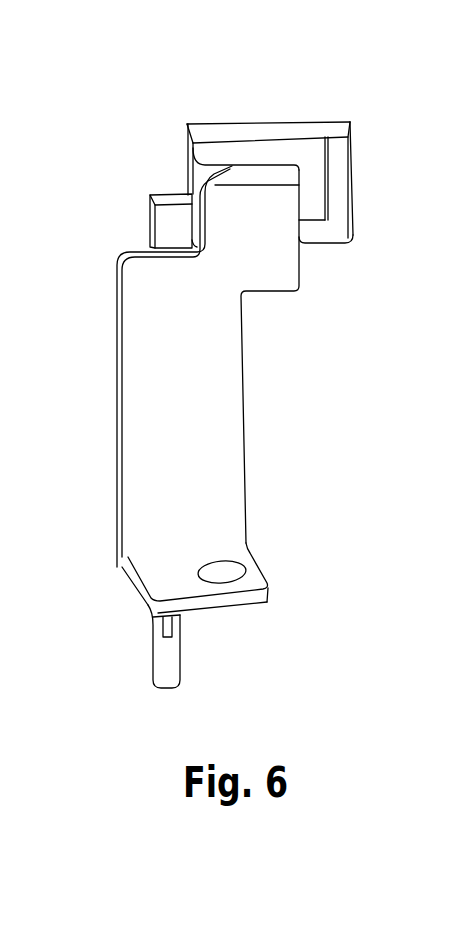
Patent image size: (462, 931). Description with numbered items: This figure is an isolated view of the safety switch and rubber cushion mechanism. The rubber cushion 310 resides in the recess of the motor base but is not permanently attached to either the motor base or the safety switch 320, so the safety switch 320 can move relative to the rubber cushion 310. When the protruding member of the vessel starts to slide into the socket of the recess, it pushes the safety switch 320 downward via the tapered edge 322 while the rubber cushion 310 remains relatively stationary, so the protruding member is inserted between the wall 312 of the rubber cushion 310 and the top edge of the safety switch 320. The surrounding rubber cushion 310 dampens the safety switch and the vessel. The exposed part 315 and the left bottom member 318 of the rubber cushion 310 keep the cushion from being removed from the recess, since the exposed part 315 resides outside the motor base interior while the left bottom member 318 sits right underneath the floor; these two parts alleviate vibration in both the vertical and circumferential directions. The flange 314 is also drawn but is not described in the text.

The rubber cushion 310 is at (150, 226).
The wall 312 is at (248, 155).
The side flange 314 is at (338, 185).
The exposed part 315 is at (313, 200).
The left bottom member 318 is at (177, 228).
The safety switch 320 is at (233, 423).
The tapered edge 322 is at (193, 178).